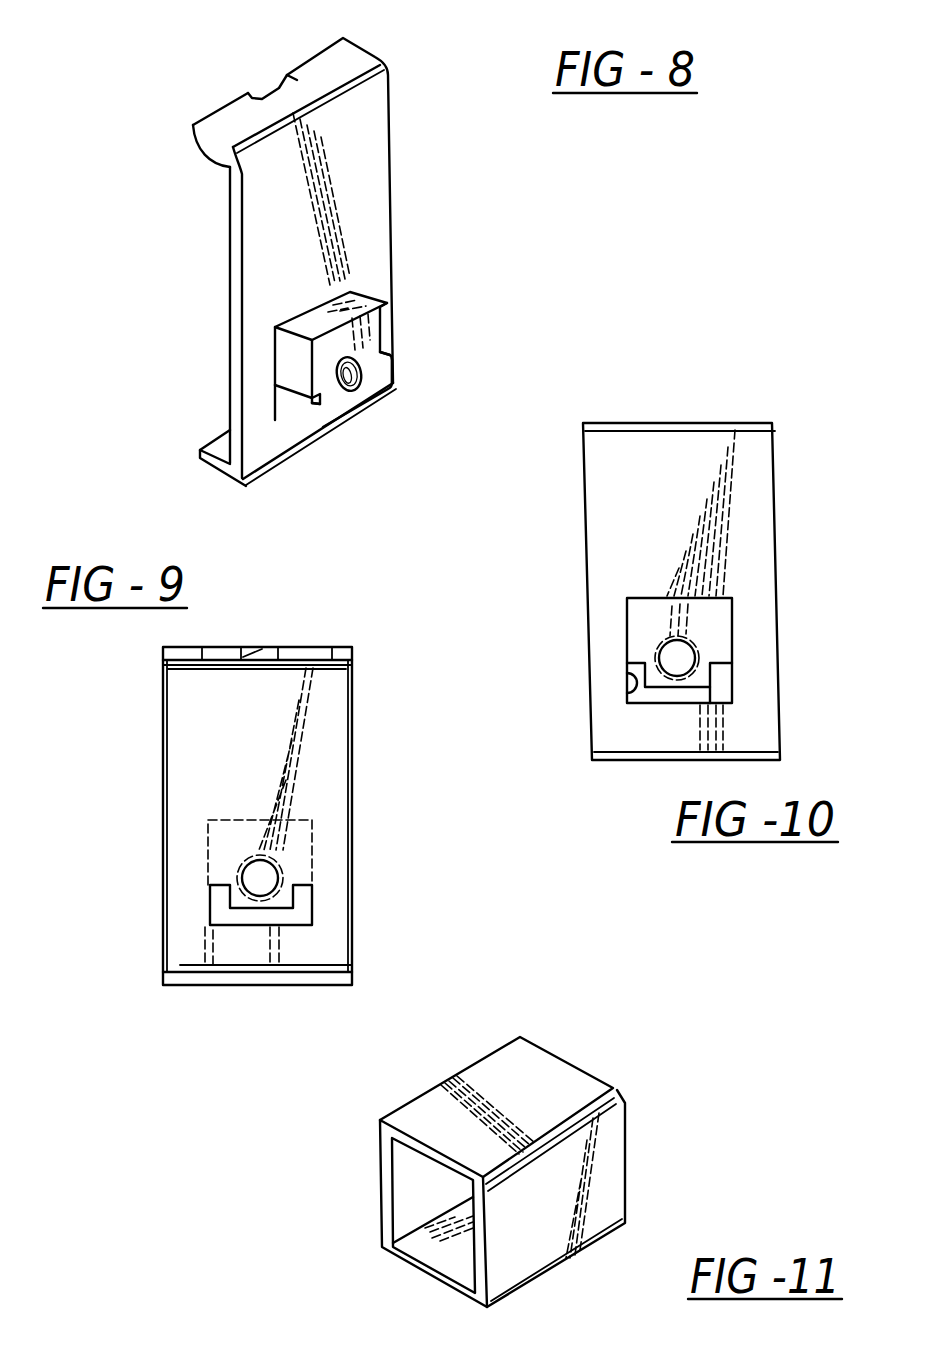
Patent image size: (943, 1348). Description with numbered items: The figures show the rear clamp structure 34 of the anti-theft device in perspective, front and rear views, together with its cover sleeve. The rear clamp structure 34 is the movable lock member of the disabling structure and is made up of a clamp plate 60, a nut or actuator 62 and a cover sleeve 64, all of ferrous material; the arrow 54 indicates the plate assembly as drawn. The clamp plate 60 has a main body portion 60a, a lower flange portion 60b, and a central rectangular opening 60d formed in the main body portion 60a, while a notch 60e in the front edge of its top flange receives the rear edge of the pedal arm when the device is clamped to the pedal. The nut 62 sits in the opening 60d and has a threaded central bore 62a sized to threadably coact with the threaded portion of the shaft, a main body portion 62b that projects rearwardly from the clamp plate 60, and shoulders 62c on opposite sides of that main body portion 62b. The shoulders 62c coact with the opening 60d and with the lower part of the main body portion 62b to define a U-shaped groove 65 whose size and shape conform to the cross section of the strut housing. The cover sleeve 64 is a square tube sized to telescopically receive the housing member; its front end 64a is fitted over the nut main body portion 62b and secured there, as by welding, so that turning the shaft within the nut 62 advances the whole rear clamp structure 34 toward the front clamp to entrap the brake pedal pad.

In FIG. 8, the rear clamp structure 34 is at (430, 172).
In FIG. 8, the mounting bracket 54 is at (220, 84).
In FIG. 8, the clamp plate 60 is at (233, 264).
In FIG. 9, the clamp plate 60 is at (259, 825).
In FIG. 10, the clamp plate 60 is at (676, 591).
In FIG. 8, the main body portion 60a is at (374, 168).
In FIG. 9, the main body portion 60a is at (249, 733).
In FIG. 10, the main body portion 60a is at (701, 590).
In FIG. 8, the lower flange portion 60b is at (200, 452).
In FIG. 9, the lower flange portion 60b is at (191, 984).
In FIG. 8, the central rectangular opening 60d is at (287, 414).
In FIG. 9, the central rectangular opening 60d is at (210, 913).
In FIG. 10, the central rectangular opening 60d is at (633, 677).
In FIG. 8, the notch 60e is at (268, 90).
In FIG. 9, the notch 60e is at (252, 648).
In FIG. 8, the nut 62 is at (354, 293).
In FIG. 9, the nut 62 is at (259, 872).
In FIG. 10, the nut 62 is at (676, 617).
In FIG. 8, the threaded central bore 62a is at (362, 392).
In FIG. 9, the threaded central bore 62a is at (278, 867).
In FIG. 10, the threaded central bore 62a is at (690, 648).
In FIG. 10, the main body portion 62b is at (645, 598).
In FIG. 8, the shoulders 62c is at (192, 132).
In FIG. 11, the cover sleeve 64 is at (622, 1083).
In FIG. 11, the front end 64a is at (495, 1060).
In FIG. 10, the U-shaped groove 65 is at (718, 686).